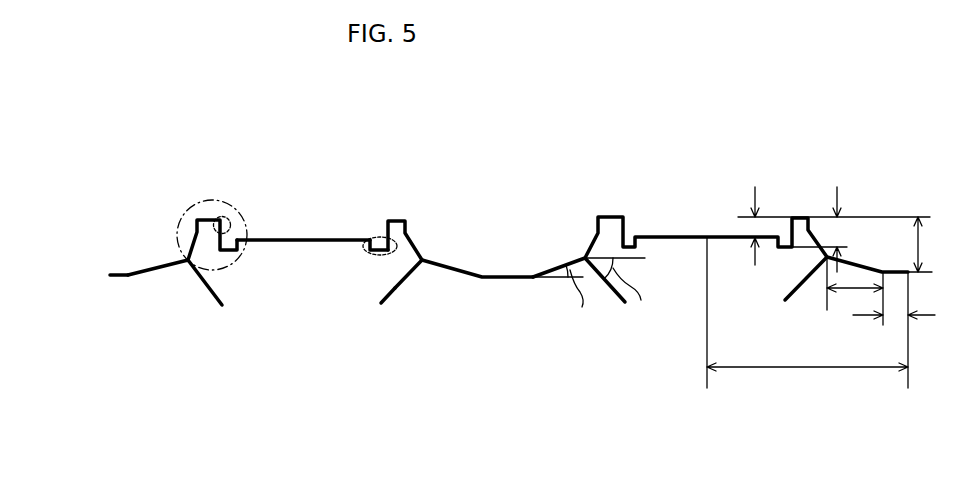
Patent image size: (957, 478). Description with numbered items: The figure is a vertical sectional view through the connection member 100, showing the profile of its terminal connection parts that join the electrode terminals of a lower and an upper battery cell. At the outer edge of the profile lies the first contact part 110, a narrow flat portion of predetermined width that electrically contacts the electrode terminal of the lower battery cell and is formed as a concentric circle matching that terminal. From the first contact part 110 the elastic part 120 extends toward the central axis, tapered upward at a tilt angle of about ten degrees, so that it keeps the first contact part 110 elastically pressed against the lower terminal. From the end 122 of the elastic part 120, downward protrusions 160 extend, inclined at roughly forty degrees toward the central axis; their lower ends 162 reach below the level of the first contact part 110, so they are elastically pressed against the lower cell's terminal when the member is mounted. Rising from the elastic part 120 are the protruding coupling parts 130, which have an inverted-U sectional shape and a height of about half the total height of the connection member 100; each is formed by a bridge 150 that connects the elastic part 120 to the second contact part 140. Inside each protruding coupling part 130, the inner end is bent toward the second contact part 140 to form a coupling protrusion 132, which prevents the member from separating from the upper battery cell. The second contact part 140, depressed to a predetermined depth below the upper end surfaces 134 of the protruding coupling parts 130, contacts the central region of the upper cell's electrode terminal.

The connection member 100 is at (158, 133).
The first contact part 110 is at (110, 277).
The elastic part 120 is at (141, 273).
The end of the elastic part 122 is at (423, 258).
The protruding coupling part 130 is at (203, 200).
The coupling protrusion 132 is at (229, 219).
The upper end surface of the protruding coupling part 134 is at (404, 221).
The second contact part 140 is at (303, 242).
The bridge 150 is at (378, 256).
The downward protrusion 160 is at (408, 282).
The lower end of the downward protrusion 162 is at (382, 305).